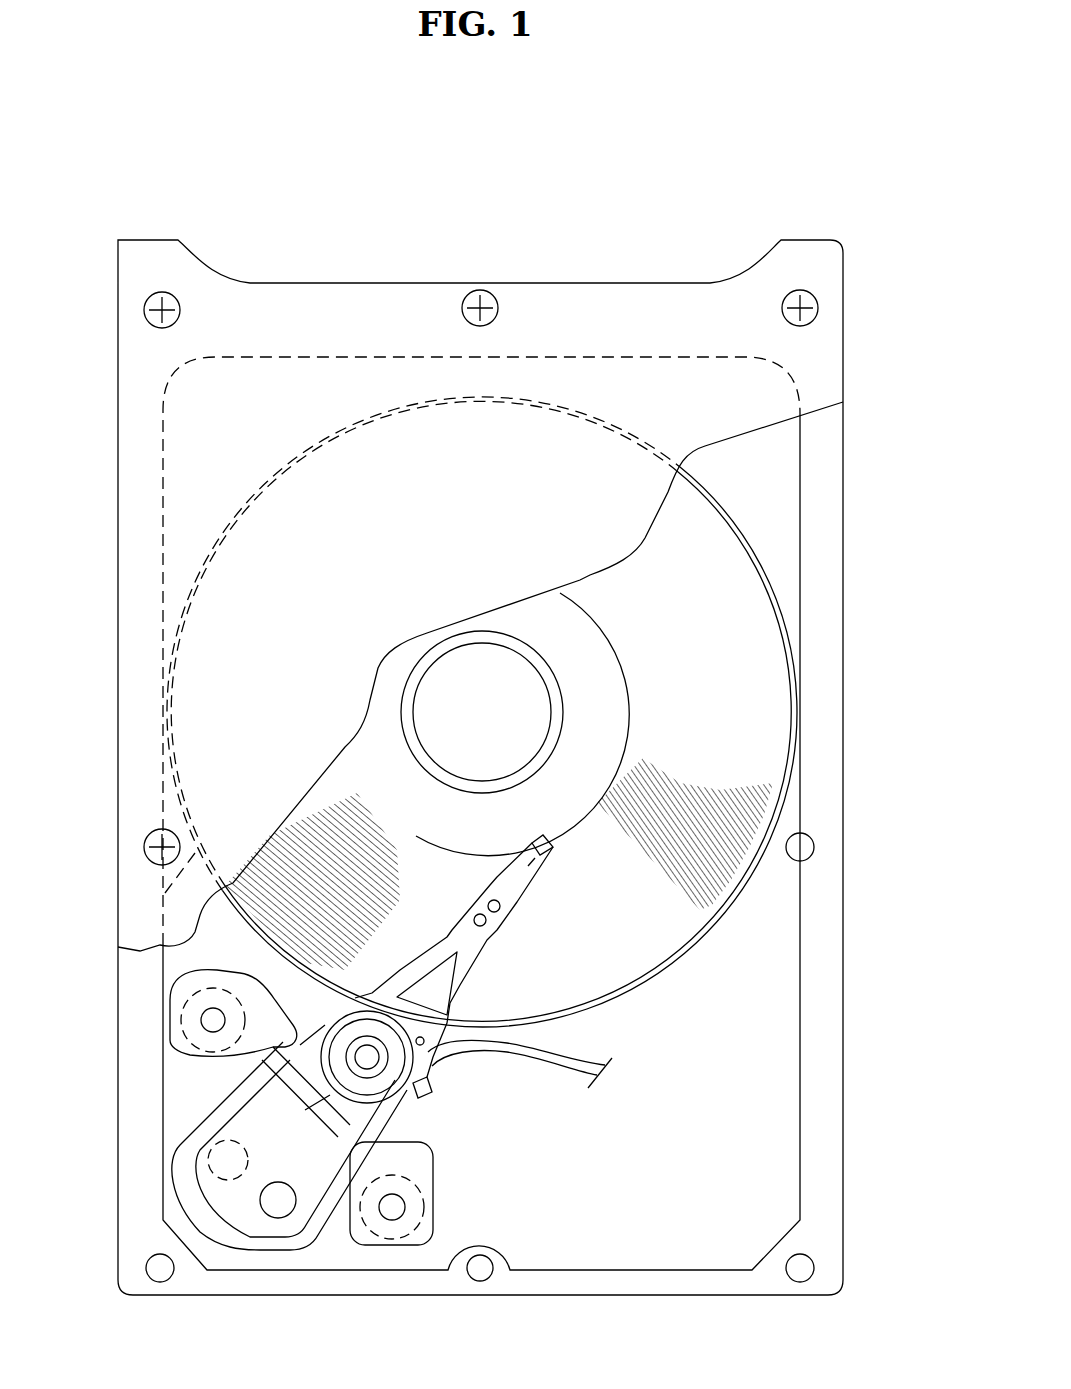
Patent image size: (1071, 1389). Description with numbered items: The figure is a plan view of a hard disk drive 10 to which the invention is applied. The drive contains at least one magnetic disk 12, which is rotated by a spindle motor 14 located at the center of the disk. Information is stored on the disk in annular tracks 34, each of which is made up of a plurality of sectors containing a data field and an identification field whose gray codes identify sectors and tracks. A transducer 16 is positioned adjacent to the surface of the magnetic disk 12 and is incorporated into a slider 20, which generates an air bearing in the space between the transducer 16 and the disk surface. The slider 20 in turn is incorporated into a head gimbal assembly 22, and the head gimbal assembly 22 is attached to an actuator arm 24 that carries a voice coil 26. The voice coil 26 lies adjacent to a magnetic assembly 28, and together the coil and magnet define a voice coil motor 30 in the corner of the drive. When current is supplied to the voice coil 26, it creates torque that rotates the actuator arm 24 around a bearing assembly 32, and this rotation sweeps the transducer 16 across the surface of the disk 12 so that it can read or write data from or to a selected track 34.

The hard disk drive 10 is at (628, 194).
The magnetic disk 12 is at (755, 642).
The spindle motor 14 is at (456, 688).
The transducer 16 is at (545, 843).
The slider 20 is at (533, 863).
The head gimbal assembly 22 is at (485, 965).
The actuator arm 24 is at (280, 1052).
The voice coil 26 is at (185, 1152).
The magnetic assembly 28 is at (185, 1087).
The voice coil motor 30 is at (337, 1223).
The bearing assembly 32 is at (378, 1067).
The annular tracks 34 is at (330, 840).